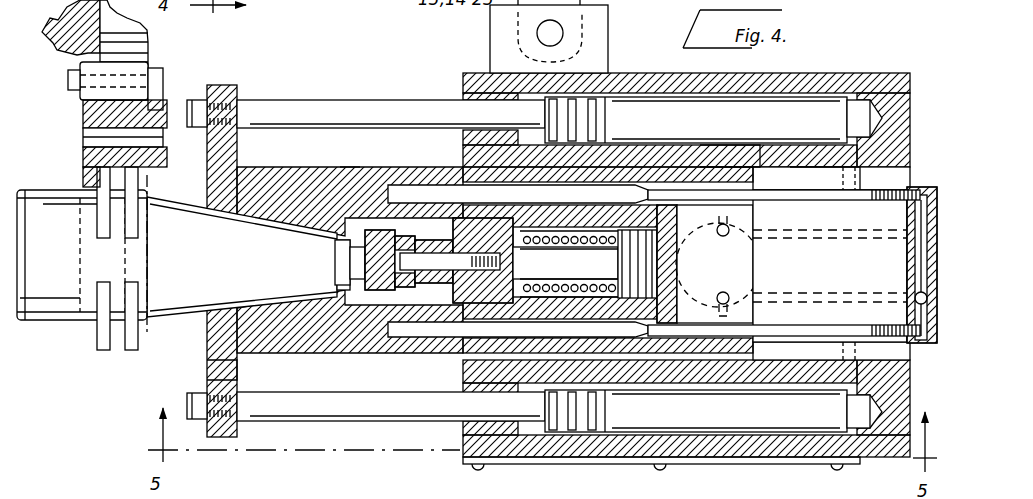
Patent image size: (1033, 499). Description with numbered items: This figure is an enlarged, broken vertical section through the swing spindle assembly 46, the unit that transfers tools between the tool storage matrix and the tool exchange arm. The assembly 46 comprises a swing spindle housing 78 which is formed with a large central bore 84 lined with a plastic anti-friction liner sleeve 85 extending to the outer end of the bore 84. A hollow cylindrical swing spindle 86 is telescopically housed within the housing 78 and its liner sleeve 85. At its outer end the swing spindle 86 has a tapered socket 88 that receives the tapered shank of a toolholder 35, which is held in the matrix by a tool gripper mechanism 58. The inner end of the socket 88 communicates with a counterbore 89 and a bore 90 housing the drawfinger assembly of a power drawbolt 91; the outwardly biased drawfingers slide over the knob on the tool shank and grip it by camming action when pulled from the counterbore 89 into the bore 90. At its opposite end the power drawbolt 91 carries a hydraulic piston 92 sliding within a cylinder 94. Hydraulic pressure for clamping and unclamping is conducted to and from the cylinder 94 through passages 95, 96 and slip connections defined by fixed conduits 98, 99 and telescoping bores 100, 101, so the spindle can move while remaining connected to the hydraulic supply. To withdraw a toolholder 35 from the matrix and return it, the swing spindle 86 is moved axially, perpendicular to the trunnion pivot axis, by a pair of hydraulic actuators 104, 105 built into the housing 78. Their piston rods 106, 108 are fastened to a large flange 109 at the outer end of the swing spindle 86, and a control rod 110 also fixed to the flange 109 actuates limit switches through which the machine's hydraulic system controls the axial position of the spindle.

The toolholder 35 is at (40, 326).
The swing spindle assembly 46 is at (200, 370).
The tool gripper mechanism 58 is at (80, 165).
The swing spindle housing 78 is at (864, 73).
The central bore 84 is at (802, 172).
The anti-friction liner sleeve 85 is at (712, 165).
The swing spindle 86 is at (296, 172).
The tapered socket 88 is at (282, 222).
The counterbore 89 is at (348, 173).
The bore 90 is at (356, 300).
The power drawbolt 91 is at (456, 266).
The hydraulic piston 92 is at (667, 264).
The cylinder 94 is at (572, 300).
The passage 95 is at (608, 260).
The passage 96 is at (718, 264).
The fixed conduit 98 is at (830, 266).
The fixed conduit 99 is at (835, 326).
The telescoping bore 100 is at (434, 178).
The telescoping bore 101 is at (456, 345).
The hydraulic actuator 104 is at (672, 130).
The hydraulic actuator 105 is at (672, 425).
The piston rod 106 is at (330, 100).
The piston rod 108 is at (318, 392).
The flange 109 is at (222, 85).
The control rod 110 is at (343, 6).